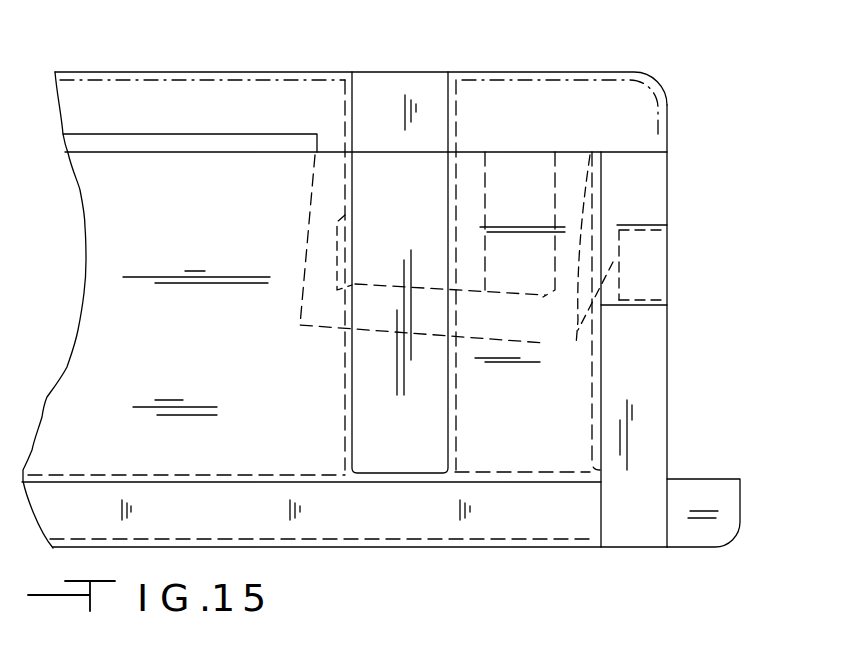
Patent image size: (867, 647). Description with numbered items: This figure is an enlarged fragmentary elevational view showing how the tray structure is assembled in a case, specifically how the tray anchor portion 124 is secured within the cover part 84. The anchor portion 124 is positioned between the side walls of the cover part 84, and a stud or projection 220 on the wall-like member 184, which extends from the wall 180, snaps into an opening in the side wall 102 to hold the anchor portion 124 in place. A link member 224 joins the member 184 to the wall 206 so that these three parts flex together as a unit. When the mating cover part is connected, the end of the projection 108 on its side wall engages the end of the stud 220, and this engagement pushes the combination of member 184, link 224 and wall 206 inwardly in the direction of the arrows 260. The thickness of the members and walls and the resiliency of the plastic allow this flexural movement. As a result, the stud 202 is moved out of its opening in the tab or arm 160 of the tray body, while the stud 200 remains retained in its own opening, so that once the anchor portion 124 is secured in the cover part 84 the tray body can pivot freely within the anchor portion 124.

The wall 180 is at (167, 72).
The stud 200 is at (366, 215).
The tray anchor portion 124 is at (490, 95).
The wall-like member 184 is at (573, 193).
The wall 206 is at (302, 245).
The stud 202 is at (365, 256).
The stud or projection 220 is at (603, 283).
The projection 108 is at (635, 290).
The link member 224 is at (537, 347).
The side wall 102 is at (667, 418).
The arrows 260 is at (289, 361).
The arm or tab 160 is at (402, 458).
The cover part 84 is at (621, 528).